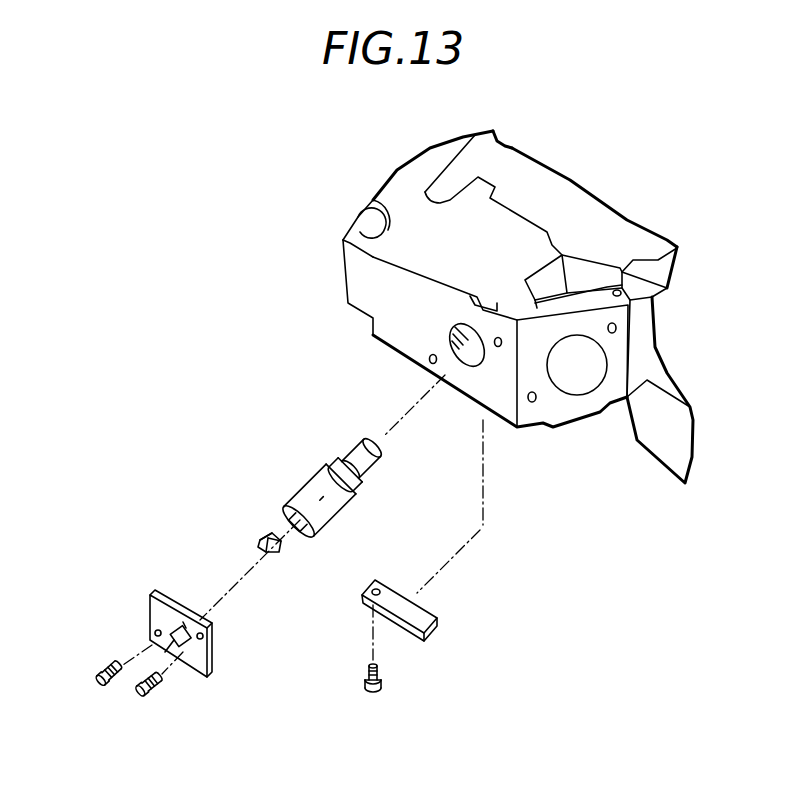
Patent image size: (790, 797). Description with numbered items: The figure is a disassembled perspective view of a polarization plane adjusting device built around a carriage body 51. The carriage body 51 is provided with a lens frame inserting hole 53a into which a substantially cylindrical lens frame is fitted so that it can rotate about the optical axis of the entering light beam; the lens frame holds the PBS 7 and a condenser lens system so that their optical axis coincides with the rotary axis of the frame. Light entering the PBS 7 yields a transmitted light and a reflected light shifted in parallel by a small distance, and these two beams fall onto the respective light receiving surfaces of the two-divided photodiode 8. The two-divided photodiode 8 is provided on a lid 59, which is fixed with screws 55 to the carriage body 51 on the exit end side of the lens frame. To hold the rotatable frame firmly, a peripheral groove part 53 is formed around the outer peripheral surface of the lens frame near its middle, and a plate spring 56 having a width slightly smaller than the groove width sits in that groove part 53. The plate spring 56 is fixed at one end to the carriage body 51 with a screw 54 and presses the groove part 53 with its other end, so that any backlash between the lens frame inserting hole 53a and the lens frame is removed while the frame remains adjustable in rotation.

The carriage body 51 is at (572, 183).
The lens frame inserting hole 53a is at (453, 338).
The peripheral groove part 53 is at (350, 443).
The PBS 7 is at (260, 530).
The lid 59 is at (167, 597).
The two-divided photodiode 8 is at (155, 624).
The screws 55 is at (98, 683).
The plate spring 56 is at (433, 610).
The screw 54 is at (373, 692).